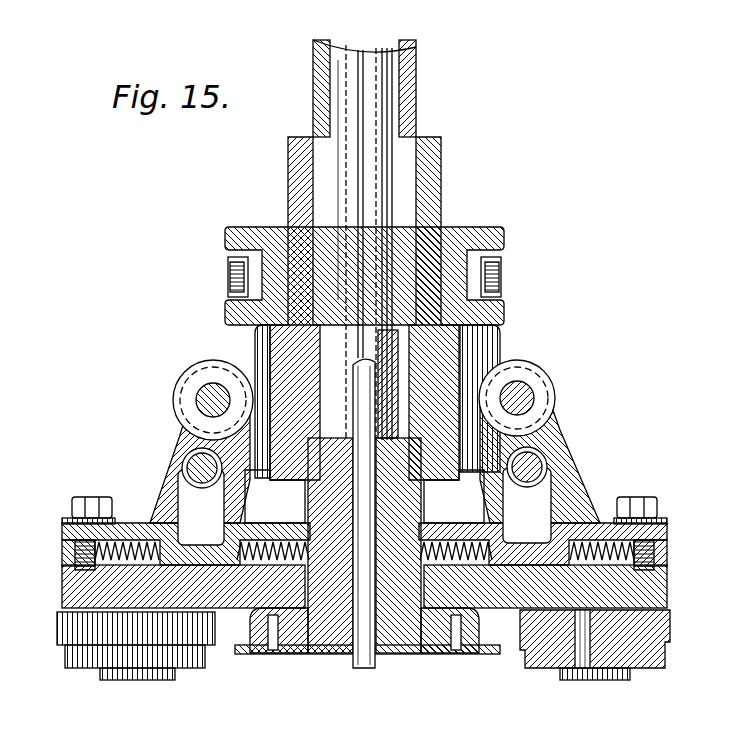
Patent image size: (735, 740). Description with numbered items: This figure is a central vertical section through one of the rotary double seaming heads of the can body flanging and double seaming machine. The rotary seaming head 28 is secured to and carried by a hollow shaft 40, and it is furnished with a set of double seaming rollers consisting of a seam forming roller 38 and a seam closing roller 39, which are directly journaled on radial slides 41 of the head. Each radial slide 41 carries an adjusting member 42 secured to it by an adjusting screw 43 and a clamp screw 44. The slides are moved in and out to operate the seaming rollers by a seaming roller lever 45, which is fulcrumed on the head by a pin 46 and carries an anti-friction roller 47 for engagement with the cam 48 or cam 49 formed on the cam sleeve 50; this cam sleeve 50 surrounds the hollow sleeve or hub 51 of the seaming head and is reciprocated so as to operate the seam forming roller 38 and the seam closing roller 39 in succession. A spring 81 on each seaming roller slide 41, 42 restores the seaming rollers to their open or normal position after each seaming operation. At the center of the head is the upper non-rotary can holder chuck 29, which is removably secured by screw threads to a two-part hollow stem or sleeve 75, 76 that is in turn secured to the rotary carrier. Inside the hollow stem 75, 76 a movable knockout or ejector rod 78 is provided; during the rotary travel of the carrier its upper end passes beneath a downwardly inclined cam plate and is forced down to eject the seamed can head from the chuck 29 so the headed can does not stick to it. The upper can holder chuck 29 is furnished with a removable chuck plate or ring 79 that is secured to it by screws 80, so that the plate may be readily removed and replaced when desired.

The two-part hollow stem or sleeve 76 is at (388, 56).
The hollow shaft 40 is at (417, 97).
The hollow sleeve or hub 51 is at (288, 178).
The cam sleeve 50 is at (463, 226).
The cam 49 is at (500, 343).
The anti-friction roller 47 is at (177, 379).
The pin 46 is at (187, 462).
The rotary seaming head 28 is at (165, 487).
The clamp screw 44 is at (82, 497).
The adjusting member 42 is at (124, 524).
The cam 48 is at (364, 496).
The seaming roller lever 45 is at (364, 506).
The spring 81 is at (272, 541).
The adjusting screw 43 is at (62, 544).
The radial slide 41 is at (62, 597).
The seam closing roller 39 is at (68, 662).
The seam forming roller 38 is at (530, 664).
The upper non-rotary can holder chuck 29 is at (317, 655).
The removable chuck plate or ring 79 is at (248, 655).
The screws 80 is at (271, 653).
The knockout or ejector rod 78 is at (367, 668).
The two-part hollow stem or sleeve 75 is at (388, 655).